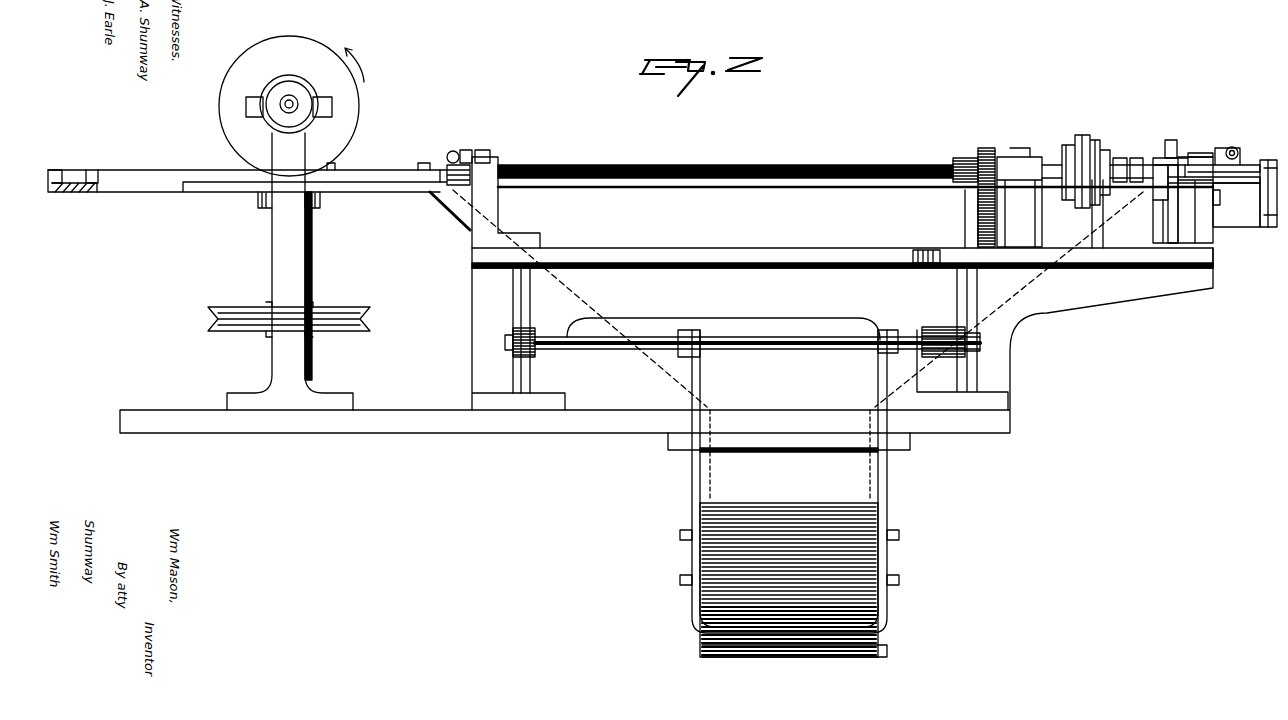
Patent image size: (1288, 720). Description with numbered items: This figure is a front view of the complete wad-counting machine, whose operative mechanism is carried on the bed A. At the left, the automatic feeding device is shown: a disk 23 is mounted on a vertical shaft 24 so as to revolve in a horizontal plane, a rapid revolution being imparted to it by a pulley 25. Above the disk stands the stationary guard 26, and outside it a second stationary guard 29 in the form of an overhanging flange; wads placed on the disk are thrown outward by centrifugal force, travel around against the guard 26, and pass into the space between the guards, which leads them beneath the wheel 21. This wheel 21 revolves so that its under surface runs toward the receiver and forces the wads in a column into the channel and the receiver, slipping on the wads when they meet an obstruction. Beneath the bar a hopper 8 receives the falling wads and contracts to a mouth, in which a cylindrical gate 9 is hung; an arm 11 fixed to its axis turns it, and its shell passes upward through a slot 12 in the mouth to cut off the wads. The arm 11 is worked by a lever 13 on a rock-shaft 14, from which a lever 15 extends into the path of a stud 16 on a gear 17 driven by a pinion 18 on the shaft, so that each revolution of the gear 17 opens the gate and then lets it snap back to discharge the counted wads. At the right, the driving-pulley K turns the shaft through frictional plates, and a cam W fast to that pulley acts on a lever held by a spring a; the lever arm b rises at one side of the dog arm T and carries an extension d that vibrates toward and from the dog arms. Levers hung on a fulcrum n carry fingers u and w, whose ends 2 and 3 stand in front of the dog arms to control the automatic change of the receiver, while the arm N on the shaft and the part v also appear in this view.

The bed A is at (666, 340).
The hopper 8 is at (821, 283).
The gate 9 is at (790, 548).
The arm 11 is at (792, 557).
The slot 12 is at (787, 494).
The lever 13 is at (738, 475).
The rock-shaft 14 is at (742, 344).
The lever 15 is at (962, 339).
The stud 16 is at (965, 205).
The gear 17 is at (988, 190).
The pinion 18 is at (965, 165).
The wheel 21 is at (291, 106).
The disk 23 is at (244, 187).
The vertical shaft 24 is at (313, 267).
The pulley 25 is at (301, 319).
The stationary guard 26 is at (92, 168).
The second stationary guard 29 is at (57, 168).
The spring a is at (696, 167).
The driving-pulley K is at (1086, 163).
The cam W is at (1098, 170).
The arm N is at (1171, 142).
The end of finger 3 is at (1164, 158).
The extension d is at (1186, 162).
The end of finger 2 is at (1200, 148).
The lever arm b is at (1165, 204).
The bar v is at (1172, 204).
The arm T is at (1195, 200).
The finger w is at (1236, 203).
The finger u is at (1244, 165).
The fulcrum n is at (1270, 186).